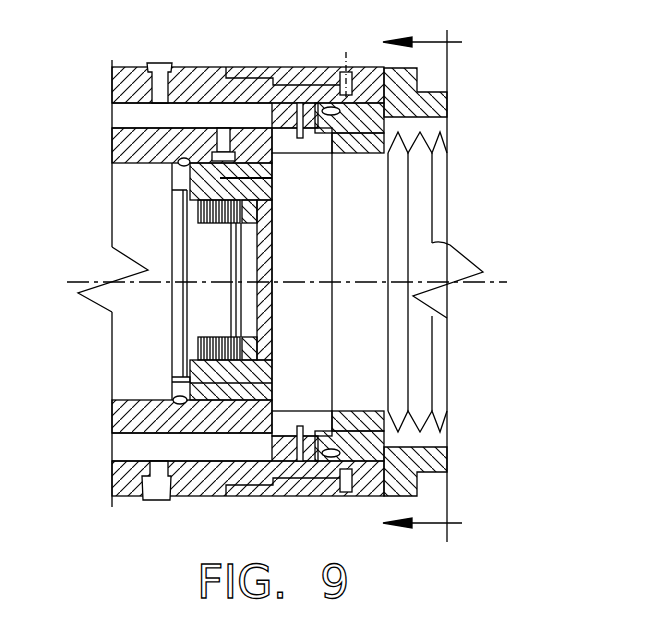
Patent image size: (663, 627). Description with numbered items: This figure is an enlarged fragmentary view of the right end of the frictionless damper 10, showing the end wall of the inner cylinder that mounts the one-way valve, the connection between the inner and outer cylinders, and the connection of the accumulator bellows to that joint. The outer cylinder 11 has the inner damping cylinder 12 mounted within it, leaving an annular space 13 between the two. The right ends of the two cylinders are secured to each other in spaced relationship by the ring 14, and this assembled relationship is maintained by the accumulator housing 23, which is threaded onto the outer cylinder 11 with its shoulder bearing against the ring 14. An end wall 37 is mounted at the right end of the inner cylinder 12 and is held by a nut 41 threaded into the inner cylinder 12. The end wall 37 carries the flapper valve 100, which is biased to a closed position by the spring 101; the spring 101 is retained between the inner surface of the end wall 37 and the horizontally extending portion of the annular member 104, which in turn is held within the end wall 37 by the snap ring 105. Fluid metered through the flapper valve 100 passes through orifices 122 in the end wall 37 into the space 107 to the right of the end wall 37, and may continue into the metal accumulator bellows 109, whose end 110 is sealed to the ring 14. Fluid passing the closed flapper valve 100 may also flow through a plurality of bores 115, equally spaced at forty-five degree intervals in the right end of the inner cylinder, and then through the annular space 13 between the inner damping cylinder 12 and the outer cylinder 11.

The frictionless damper 10 is at (441, 284).
The outer cylinder 11 is at (182, 72).
The inner damping cylinder 12 is at (142, 163).
The annular space 13 is at (122, 119).
The ring 14 is at (360, 408).
The accumulator housing 23 is at (443, 457).
The end wall 37 is at (281, 188).
The nut 41 is at (277, 400).
The flapper valve 100 is at (273, 252).
The spring 101 is at (122, 260).
The annular member 104 is at (183, 318).
The snap ring 105 is at (183, 372).
The space 107 is at (377, 188).
The metal accumulator bellows 109 is at (447, 244).
The end of bellows 110 is at (400, 134).
The bores 115 is at (300, 138).
The orifices 122 is at (270, 223).